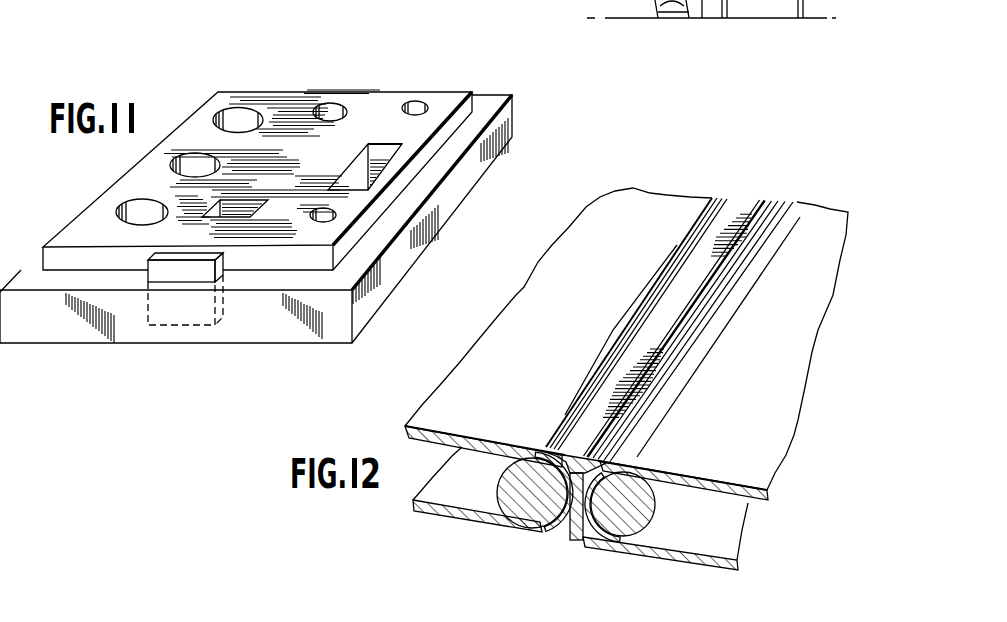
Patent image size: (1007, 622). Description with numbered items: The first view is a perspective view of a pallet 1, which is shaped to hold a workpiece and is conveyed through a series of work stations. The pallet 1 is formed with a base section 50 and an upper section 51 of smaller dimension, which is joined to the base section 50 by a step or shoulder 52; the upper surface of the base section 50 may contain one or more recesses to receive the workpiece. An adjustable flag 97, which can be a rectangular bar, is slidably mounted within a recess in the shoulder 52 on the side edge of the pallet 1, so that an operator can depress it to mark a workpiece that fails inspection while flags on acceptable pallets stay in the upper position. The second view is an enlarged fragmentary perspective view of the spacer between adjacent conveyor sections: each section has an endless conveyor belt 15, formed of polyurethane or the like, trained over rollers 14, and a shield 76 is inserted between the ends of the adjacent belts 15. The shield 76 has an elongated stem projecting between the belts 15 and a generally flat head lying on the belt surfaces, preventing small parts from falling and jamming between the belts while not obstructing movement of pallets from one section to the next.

In FIG. 11, the pallet 1 is at (288, 88).
In FIG. 11, the base section 50 is at (513, 126).
In FIG. 11, the upper section 51 is at (447, 96).
In FIG. 11, the shoulder 52 is at (495, 100).
In FIG. 11, the adjustable flag 97 is at (190, 272).
In FIG. 12, the rollers 14 is at (538, 513).
In FIG. 12, the endless conveyor belt 15 is at (668, 204).
In FIG. 12, the shield 76 is at (678, 325).